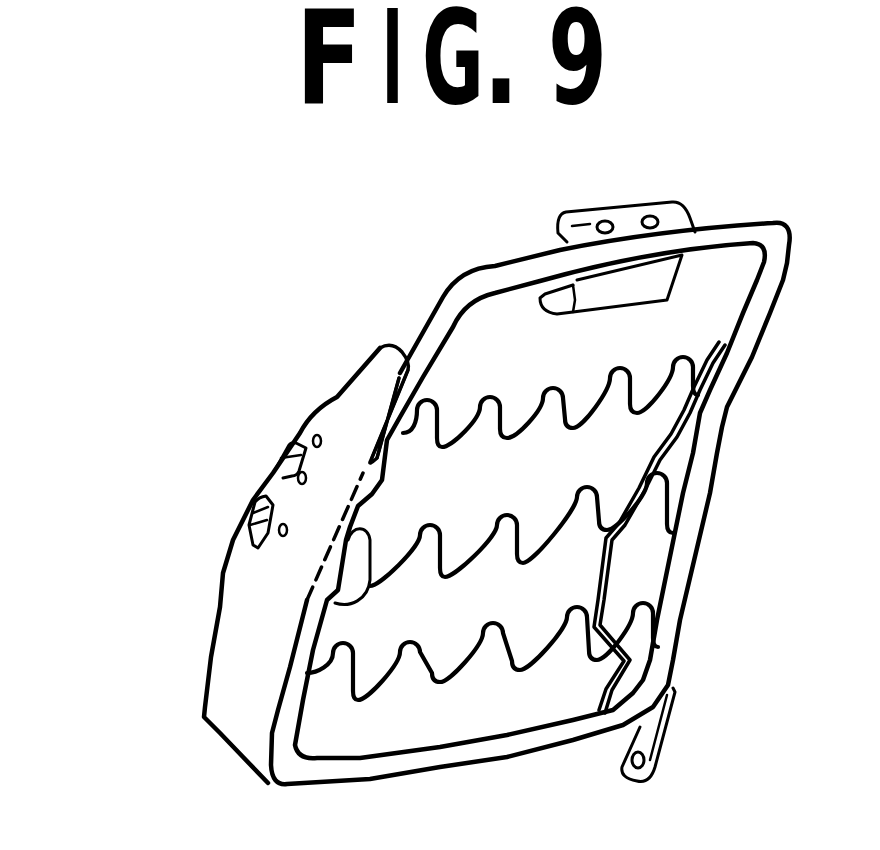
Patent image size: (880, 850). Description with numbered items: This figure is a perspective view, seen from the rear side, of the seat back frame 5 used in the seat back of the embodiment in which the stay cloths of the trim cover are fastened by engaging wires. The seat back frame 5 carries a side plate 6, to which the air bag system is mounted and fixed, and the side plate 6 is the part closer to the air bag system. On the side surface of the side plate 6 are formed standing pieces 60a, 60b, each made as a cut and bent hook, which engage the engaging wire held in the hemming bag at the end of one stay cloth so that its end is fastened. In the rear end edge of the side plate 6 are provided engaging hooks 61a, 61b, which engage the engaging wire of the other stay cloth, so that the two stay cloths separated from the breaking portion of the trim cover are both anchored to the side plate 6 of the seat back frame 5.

The seat back frame 5 is at (488, 266).
The side plate 6 is at (231, 657).
The standing piece 60a is at (275, 473).
The standing piece 60b is at (245, 520).
The engaging hook 61a is at (392, 422).
The engaging hook 61b is at (335, 604).